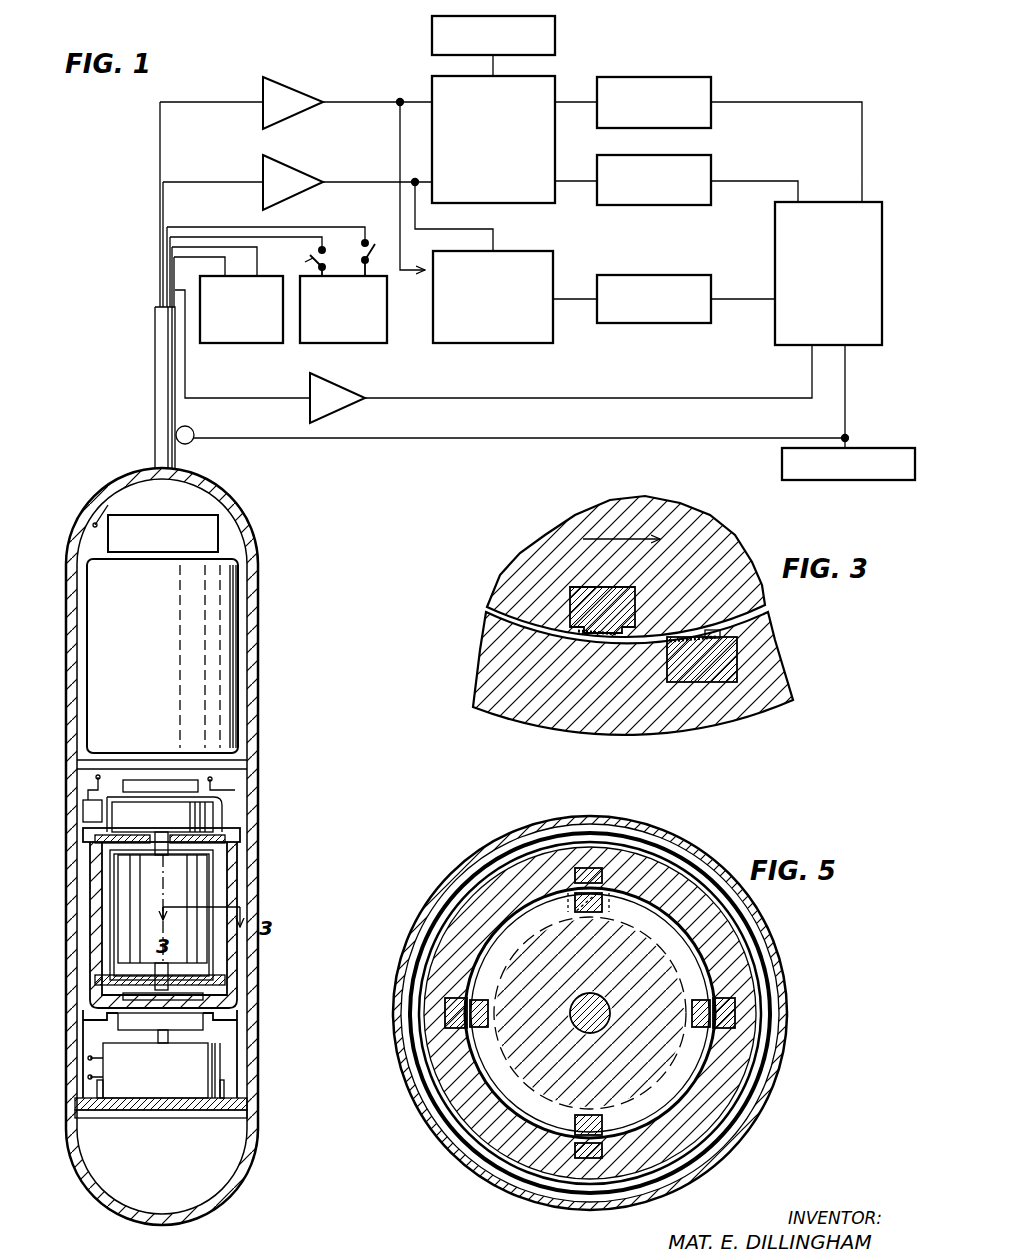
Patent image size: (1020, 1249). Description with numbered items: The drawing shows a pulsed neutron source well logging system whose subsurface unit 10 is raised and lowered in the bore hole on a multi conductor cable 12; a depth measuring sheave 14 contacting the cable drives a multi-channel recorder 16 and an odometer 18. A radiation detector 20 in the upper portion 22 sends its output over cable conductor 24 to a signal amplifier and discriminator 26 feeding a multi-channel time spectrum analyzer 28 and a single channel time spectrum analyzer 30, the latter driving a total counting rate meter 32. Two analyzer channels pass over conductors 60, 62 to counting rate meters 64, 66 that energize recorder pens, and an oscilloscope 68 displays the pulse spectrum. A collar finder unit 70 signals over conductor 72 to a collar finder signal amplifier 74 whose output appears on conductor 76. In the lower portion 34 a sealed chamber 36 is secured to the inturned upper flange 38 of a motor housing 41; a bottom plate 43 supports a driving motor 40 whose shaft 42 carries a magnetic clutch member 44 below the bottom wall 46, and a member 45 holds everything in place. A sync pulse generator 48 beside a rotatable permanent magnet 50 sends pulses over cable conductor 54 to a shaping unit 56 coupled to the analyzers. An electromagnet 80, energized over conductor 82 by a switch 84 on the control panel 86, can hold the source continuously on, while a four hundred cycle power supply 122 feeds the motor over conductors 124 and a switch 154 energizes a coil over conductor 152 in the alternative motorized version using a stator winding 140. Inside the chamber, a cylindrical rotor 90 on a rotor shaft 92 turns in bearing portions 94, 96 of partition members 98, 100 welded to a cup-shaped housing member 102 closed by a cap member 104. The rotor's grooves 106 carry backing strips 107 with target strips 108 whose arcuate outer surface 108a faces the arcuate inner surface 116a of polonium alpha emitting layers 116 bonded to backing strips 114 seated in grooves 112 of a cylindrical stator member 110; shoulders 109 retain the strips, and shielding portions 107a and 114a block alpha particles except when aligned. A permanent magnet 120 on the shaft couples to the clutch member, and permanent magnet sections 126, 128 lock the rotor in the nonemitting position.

In FIG. 1, the subsurface unit 10 is at (262, 710).
In FIG. 5, the subsurface unit 10 is at (790, 985).
In FIG. 1, the multi conductor cable 12 is at (155, 442).
In FIG. 1, the depth measuring sheave 14 is at (192, 442).
In FIG. 1, the multi-channel recorder 16 is at (882, 302).
In FIG. 1, the odometer 18 is at (888, 448).
In FIG. 1, the radiation detector 20 is at (236, 657).
In FIG. 1, the upper portion 22 is at (240, 548).
In FIG. 1, the cable conductor 24 is at (198, 178).
In FIG. 1, the signal amplifier and discriminator 26 is at (294, 176).
In FIG. 1, the multi-channel time spectrum analyzer 28 is at (540, 200).
In FIG. 1, the single channel time spectrum analyzer 30 is at (535, 343).
In FIG. 1, the total counting rate meter 32 is at (656, 323).
In FIG. 1, the lower portion 34 is at (240, 812).
In FIG. 1, the sealed chamber 36 is at (242, 875).
In FIG. 5, the sealed chamber 36 is at (753, 945).
In FIG. 1, the inturned upper flange 38 is at (95, 1020).
In FIG. 1, the driving motor 40 is at (205, 1072).
In FIG. 1, the motor housing 41 is at (224, 1090).
In FIG. 1, the motor shaft 42 is at (203, 1040).
In FIG. 1, the bottom plate 43 is at (118, 1112).
In FIG. 1, the magnetic clutch member 44 is at (215, 1018).
In FIG. 1, the retaining member 45 is at (200, 1118).
In FIG. 1, the bottom wall 46 is at (115, 1036).
In FIG. 1, the sync pulse generator 48 is at (83, 812).
In FIG. 1, the rotatable permanent magnet 50 is at (248, 790).
In FIG. 1, the cable conductor 54 is at (212, 100).
In FIG. 1, the sync pulse amplifier unit 56 is at (294, 96).
In FIG. 1, the conductor 60 is at (562, 104).
In FIG. 1, the conductor 62 is at (587, 181).
In FIG. 1, the counting rate meter 64 is at (630, 77).
In FIG. 1, the counting rate meter 66 is at (650, 155).
In FIG. 1, the oscilloscope 68 is at (432, 34).
In FIG. 1, the collar finder unit 70 is at (220, 520).
In FIG. 1, the conductor 72 is at (240, 398).
In FIG. 1, the collar finder signal amplifier 74 is at (345, 405).
In FIG. 1, the conductor 76 is at (448, 398).
In FIG. 1, the electromagnet 80 is at (140, 780).
In FIG. 1, the conductor 82 is at (236, 225).
In FIG. 1, the switch 84 is at (368, 240).
In FIG. 1, the control panel 86 is at (387, 297).
In FIG. 1, the cylindrical rotor 90 is at (185, 895).
In FIG. 5, the cylindrical rotor 90 is at (590, 1013).
In FIG. 1, the rotor shaft 92 is at (170, 850).
In FIG. 5, the rotor shaft 92 is at (606, 1030).
In FIG. 1, the bearing portion 94 is at (100, 975).
In FIG. 1, the bearing portion 96 is at (118, 858).
In FIG. 1, the transverse partition member 98 is at (205, 996).
In FIG. 1, the transverse partition member 100 is at (240, 840).
In FIG. 1, the cup-shaped housing member 102 is at (237, 962).
In FIG. 5, the cup-shaped housing member 102 is at (452, 918).
In FIG. 1, the cap member 104 is at (222, 805).
In FIG. 3, the longitudinal grooves 106 is at (616, 590).
In FIG. 3, the backing strips 107 is at (597, 587).
In FIG. 3, the shielding portions 107a is at (584, 640).
In FIG. 1, the target strips 108 is at (114, 885).
In FIG. 3, the target strips 108 is at (598, 640).
In FIG. 5, the target strips 108 is at (592, 912).
In FIG. 3, the arcuate outer surface 108a is at (610, 640).
In FIG. 3, the shoulders 109 is at (560, 638).
In FIG. 1, the cylindrical stator member 110 is at (110, 915).
In FIG. 3, the cylindrical stator member 110 is at (728, 718).
In FIG. 5, the cylindrical stator member 110 is at (492, 900).
In FIG. 3, the undercut grooves 112 is at (680, 665).
In FIG. 3, the backing strip 114 is at (737, 660).
In FIG. 5, the backing strip 114 is at (590, 868).
In FIG. 3, the shielding portions 114a is at (680, 637).
In FIG. 3, the alpha emitting layer 116 is at (712, 630).
In FIG. 3, the arcuate inner surface 116a is at (690, 636).
In FIG. 1, the permanent magnet 120 is at (105, 988).
In FIG. 1, the 400 cycle power supply 122 is at (248, 343).
In FIG. 1, the conductors 124 is at (250, 268).
In FIG. 1, the permanent magnet section 126 is at (108, 842).
In FIG. 1, the permanent magnet section 128 is at (240, 830).
In FIG. 5, the stator winding 140 is at (778, 1045).
In FIG. 1, the conductor 152 is at (290, 240).
In FIG. 1, the switch 154 is at (295, 268).